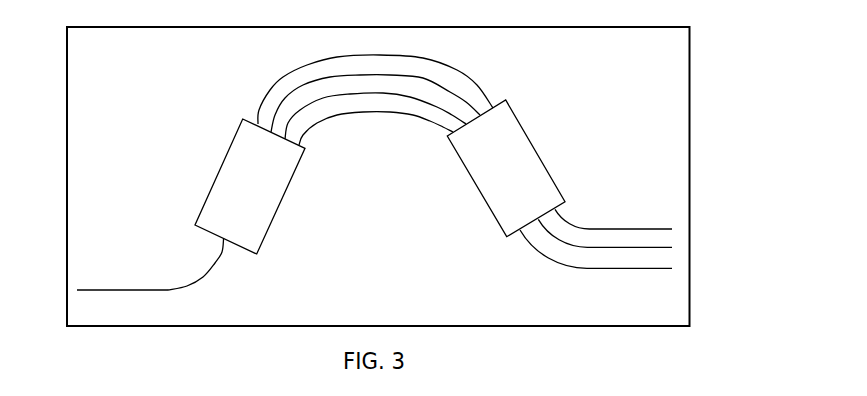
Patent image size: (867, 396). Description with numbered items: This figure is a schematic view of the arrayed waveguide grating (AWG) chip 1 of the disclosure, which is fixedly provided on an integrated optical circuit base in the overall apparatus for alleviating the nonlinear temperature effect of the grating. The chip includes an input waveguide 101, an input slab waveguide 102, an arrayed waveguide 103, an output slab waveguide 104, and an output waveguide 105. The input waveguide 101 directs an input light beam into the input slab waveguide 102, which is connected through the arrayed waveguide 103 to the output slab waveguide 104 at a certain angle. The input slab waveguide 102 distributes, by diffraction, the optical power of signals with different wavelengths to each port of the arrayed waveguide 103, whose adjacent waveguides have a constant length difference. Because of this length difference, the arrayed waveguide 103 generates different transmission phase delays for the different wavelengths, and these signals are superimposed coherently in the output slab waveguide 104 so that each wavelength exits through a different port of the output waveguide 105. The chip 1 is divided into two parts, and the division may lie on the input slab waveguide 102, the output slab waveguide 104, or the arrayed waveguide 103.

The arrayed waveguide grating (AWG) chip 1 is at (378, 176).
The input waveguide 101 is at (169, 281).
The input slab waveguide 102 is at (226, 180).
The arrayed waveguide 103 is at (294, 82).
The output slab waveguide 104 is at (541, 148).
The output waveguide 105 is at (605, 234).